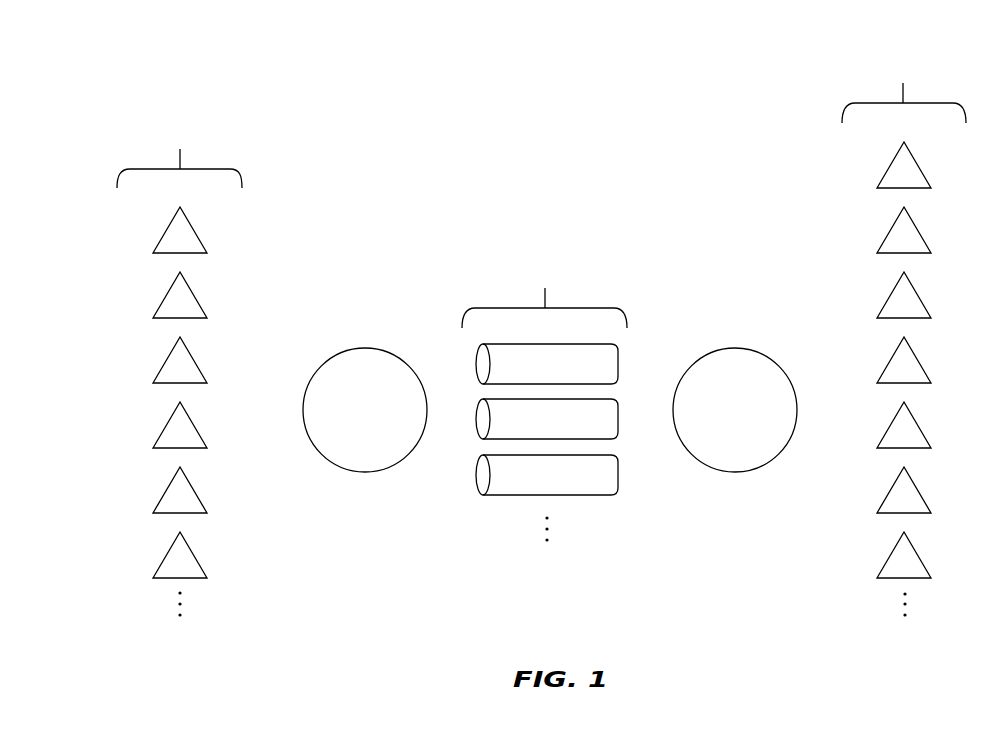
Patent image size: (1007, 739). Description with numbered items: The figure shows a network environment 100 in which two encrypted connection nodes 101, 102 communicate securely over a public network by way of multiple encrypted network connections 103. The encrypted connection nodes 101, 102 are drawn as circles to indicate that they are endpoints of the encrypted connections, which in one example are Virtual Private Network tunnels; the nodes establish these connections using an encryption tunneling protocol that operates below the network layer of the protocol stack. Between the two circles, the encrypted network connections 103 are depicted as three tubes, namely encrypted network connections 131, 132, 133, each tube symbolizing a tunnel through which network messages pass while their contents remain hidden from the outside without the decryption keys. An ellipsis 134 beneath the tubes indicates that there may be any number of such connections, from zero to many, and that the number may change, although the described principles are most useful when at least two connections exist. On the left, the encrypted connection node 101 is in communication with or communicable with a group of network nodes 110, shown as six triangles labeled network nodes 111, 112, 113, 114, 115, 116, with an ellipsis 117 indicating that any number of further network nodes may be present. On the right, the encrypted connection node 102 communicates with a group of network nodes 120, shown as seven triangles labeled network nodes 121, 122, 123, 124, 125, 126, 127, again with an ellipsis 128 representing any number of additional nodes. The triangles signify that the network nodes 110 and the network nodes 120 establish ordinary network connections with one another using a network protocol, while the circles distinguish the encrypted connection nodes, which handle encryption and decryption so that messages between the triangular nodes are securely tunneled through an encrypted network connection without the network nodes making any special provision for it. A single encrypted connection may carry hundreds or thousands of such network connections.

The network environment 100 is at (530, 139).
The encrypted connection node 101 is at (349, 419).
The encrypted connection node 102 is at (719, 419).
The encrypted network connections 103 is at (544, 293).
The network nodes 110 is at (179, 153).
The network node 111 is at (186, 217).
The network node 112 is at (186, 282).
The network node 113 is at (186, 347).
The network node 114 is at (186, 412).
The network node 115 is at (186, 477).
The network node 116 is at (186, 542).
The ellipsis 117 is at (184, 604).
The network nodes 120 is at (904, 88).
The network node 121 is at (910, 152).
The network node 122 is at (910, 217).
The network node 123 is at (910, 282).
The network node 124 is at (910, 347).
The network node 125 is at (910, 412).
The network node 126 is at (910, 477).
The network node 127 is at (910, 542).
The ellipsis 128 is at (909, 604).
The encrypted network connection 131 is at (530, 373).
The encrypted network connection 132 is at (530, 428).
The encrypted network connection 133 is at (530, 484).
The ellipsis 134 is at (551, 528).